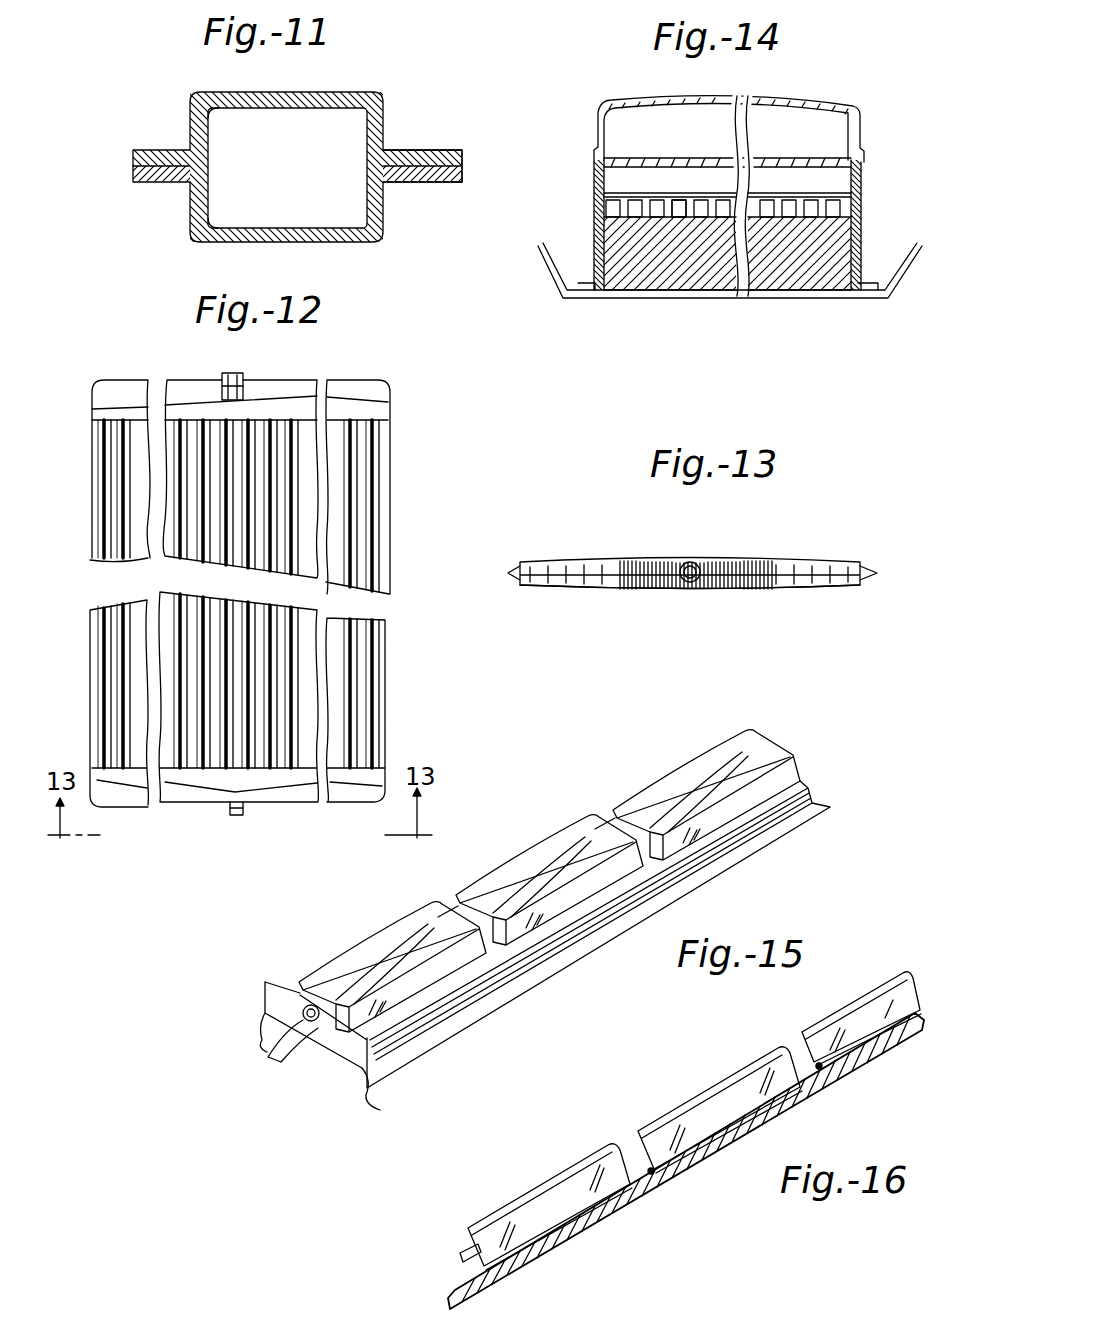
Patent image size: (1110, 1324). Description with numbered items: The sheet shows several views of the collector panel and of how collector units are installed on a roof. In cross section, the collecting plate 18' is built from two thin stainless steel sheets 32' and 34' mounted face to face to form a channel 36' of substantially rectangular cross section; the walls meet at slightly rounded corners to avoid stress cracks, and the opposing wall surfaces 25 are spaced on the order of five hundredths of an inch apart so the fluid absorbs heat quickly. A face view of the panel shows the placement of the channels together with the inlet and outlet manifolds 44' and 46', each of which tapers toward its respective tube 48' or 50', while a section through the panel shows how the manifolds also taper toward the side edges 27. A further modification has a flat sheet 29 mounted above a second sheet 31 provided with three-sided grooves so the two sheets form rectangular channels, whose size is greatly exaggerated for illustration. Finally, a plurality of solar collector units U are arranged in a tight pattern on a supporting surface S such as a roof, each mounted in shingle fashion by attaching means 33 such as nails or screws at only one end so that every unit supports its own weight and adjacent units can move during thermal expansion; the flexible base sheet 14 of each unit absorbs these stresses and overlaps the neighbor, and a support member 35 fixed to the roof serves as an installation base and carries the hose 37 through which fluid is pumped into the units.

In FIG. 16, the base sheet 14 is at (580, 1217).
In FIG. 12, the collecting plate 18' is at (231, 597).
In FIG. 13, the collecting plate 18' is at (697, 575).
In FIG. 11, the opposing wall surfaces 25 is at (254, 109).
In FIG. 12, the side edges 27 is at (94, 641).
In FIG. 13, the side edges 27 is at (512, 576).
In FIG. 14, the flat sheet 29 is at (664, 200).
In FIG. 14, the second sheet 31 is at (668, 200).
In FIG. 11, the sheet 32' is at (297, 149).
In FIG. 16, the attaching means 33 is at (649, 1178).
In FIG. 11, the sheet 34' is at (422, 188).
In FIG. 15, the support member 35 is at (270, 997).
In FIG. 11, the channel 36' is at (287, 168).
In FIG. 15, the hose 37 is at (282, 1064).
In FIG. 12, the inlet manifold 44' is at (240, 468).
In FIG. 12, the outlet manifold 46' is at (237, 720).
In FIG. 13, the outlet manifold 46' is at (690, 607).
In FIG. 12, the tube 48' is at (197, 370).
In FIG. 12, the tube 50' is at (283, 823).
In FIG. 13, the tube 50' is at (708, 594).
In FIG. 15, the supporting surface S is at (604, 930).
In FIG. 16, the supporting surface S is at (463, 1285).
In FIG. 15, the solar collector units U is at (676, 768).
In FIG. 16, the solar collector units U is at (551, 1225).